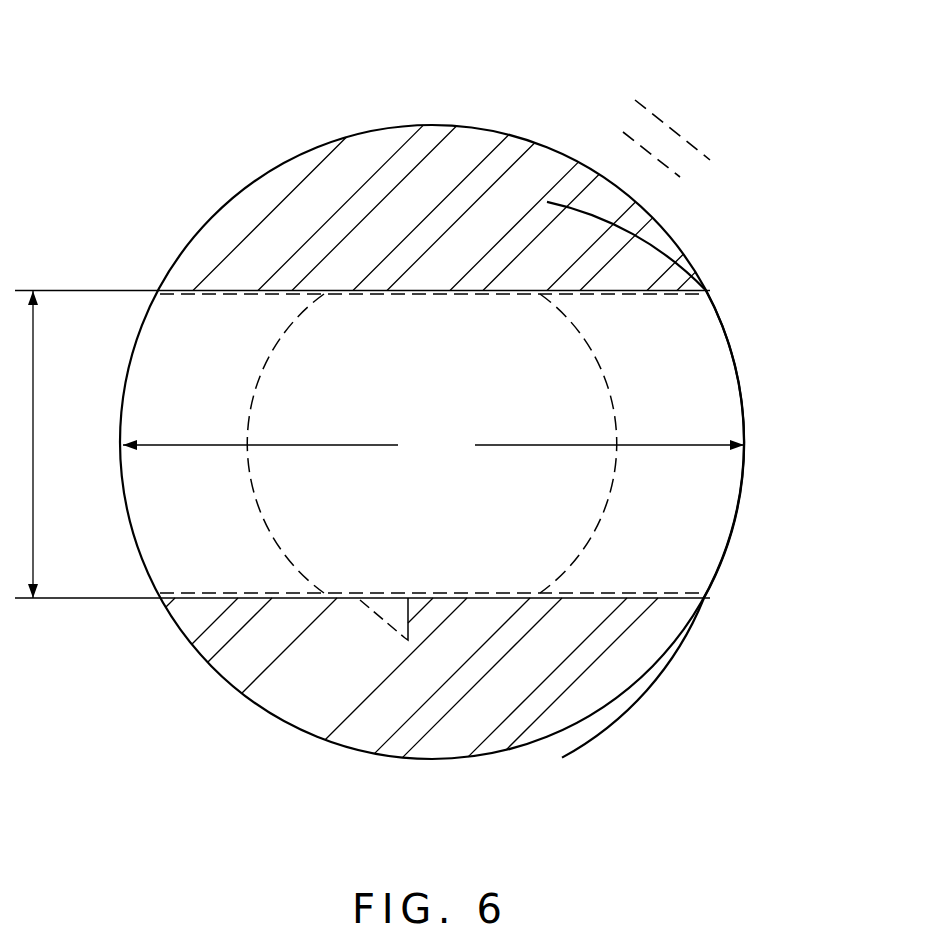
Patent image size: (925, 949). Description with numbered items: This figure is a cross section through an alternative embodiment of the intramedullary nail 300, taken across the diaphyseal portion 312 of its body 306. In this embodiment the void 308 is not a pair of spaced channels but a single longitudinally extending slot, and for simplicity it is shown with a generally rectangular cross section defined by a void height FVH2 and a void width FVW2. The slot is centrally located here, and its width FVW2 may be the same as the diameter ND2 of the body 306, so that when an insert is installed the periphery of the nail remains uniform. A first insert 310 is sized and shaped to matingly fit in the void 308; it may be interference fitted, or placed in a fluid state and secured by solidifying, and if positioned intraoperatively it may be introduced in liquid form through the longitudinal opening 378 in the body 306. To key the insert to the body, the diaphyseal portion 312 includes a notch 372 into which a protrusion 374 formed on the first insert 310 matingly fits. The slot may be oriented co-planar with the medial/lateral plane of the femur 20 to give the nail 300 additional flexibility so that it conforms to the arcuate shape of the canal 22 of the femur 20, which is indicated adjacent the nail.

The intramedullary nail 300 is at (200, 87).
The body 306 is at (190, 218).
The void 308 is at (725, 325).
The first insert 310 is at (740, 503).
The diaphyseal portion 312 is at (660, 665).
The canal 22 is at (635, 168).
The femur 20 is at (677, 128).
The longitudinal opening 378 is at (250, 423).
The notch 372 is at (398, 593).
The protrusion 374 is at (363, 607).
The diameter ND2 is at (277, 720).
The void height FVH2 is at (38, 444).
The void width FVW2 is at (433, 447).